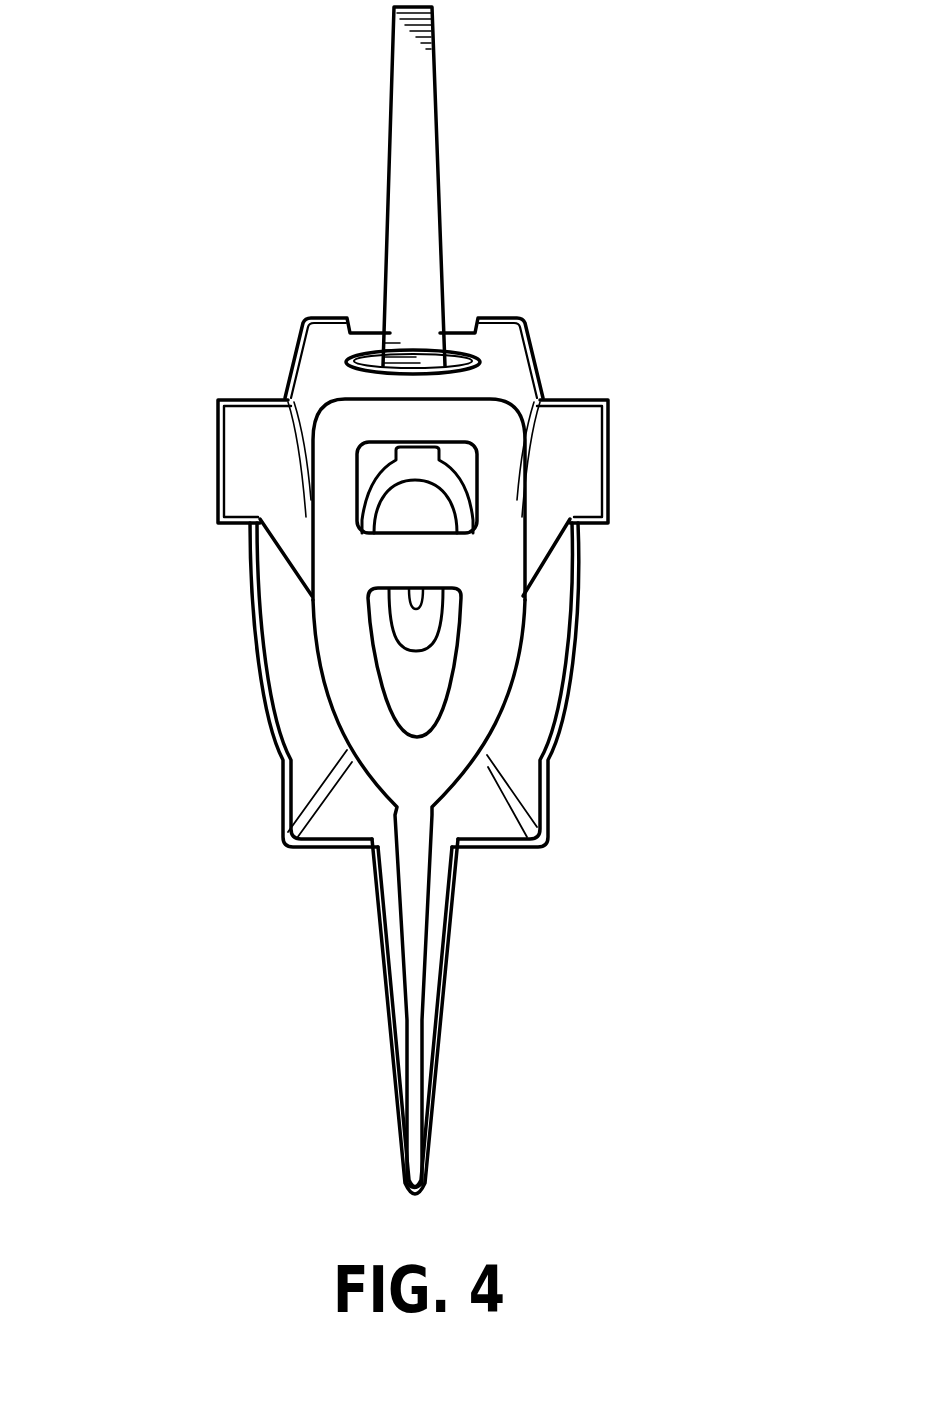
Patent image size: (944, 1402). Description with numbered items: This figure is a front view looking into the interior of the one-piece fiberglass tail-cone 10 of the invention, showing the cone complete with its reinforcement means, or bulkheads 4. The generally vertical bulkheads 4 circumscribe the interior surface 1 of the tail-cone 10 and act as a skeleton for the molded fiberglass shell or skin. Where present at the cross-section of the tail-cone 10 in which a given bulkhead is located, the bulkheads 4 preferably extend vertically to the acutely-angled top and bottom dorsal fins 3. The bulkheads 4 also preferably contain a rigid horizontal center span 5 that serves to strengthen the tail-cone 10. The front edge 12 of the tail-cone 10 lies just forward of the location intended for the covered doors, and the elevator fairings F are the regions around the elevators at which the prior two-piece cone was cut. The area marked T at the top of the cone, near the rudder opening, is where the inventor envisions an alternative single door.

The tail-cone 10 is at (175, 343).
The interior surface 1 is at (255, 575).
The dorsal fin 3 is at (447, 1022).
The bulkhead 4 is at (417, 683).
The horizontal center span 5 is at (363, 570).
The front edge 12 is at (573, 692).
The elevator fairing F is at (608, 460).
The single door area T is at (433, 388).